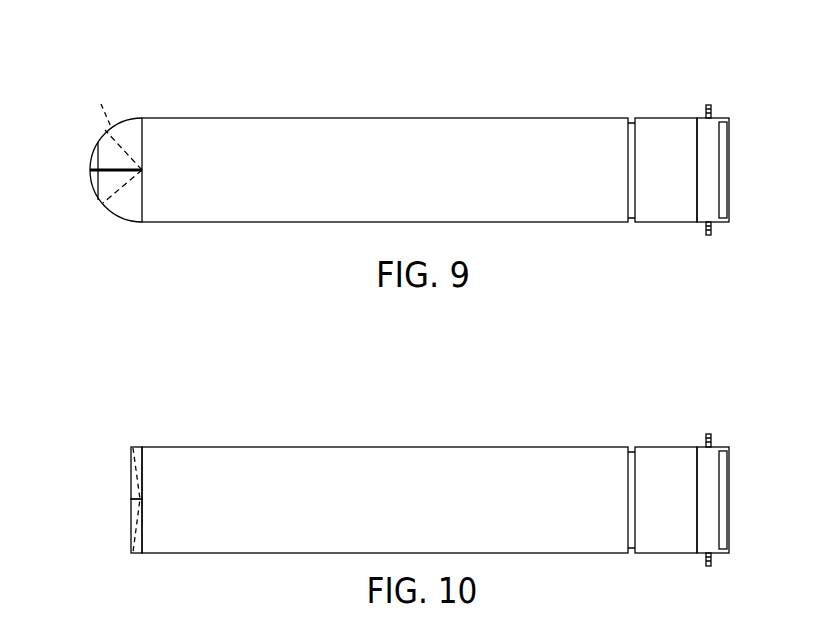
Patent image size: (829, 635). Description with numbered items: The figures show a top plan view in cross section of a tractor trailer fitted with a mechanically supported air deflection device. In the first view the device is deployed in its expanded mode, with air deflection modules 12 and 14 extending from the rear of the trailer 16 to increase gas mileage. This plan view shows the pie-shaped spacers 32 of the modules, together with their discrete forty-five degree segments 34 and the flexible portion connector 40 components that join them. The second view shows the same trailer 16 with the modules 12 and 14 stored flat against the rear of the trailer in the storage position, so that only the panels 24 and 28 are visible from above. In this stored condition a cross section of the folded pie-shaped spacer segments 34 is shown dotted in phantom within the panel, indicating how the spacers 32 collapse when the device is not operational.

In FIG. 9, the air deflection module 12 is at (90, 169).
In FIG. 9, the air deflection module 14 is at (97, 195).
In FIG. 9, the trailer 16 is at (415, 128).
In FIG. 10, the trailer 16 is at (435, 500).
In FIG. 10, the panel 24 is at (131, 488).
In FIG. 10, the panel 28 is at (131, 528).
In FIG. 9, the pie-shaped spacer 32 is at (132, 138).
In FIG. 10, the pie-shaped spacer 32 is at (136, 482).
In FIG. 9, the 45° segment 34 is at (132, 212).
In FIG. 10, the 45° segment 34 is at (133, 553).
In FIG. 9, the flexible portion connector 40 is at (102, 106).